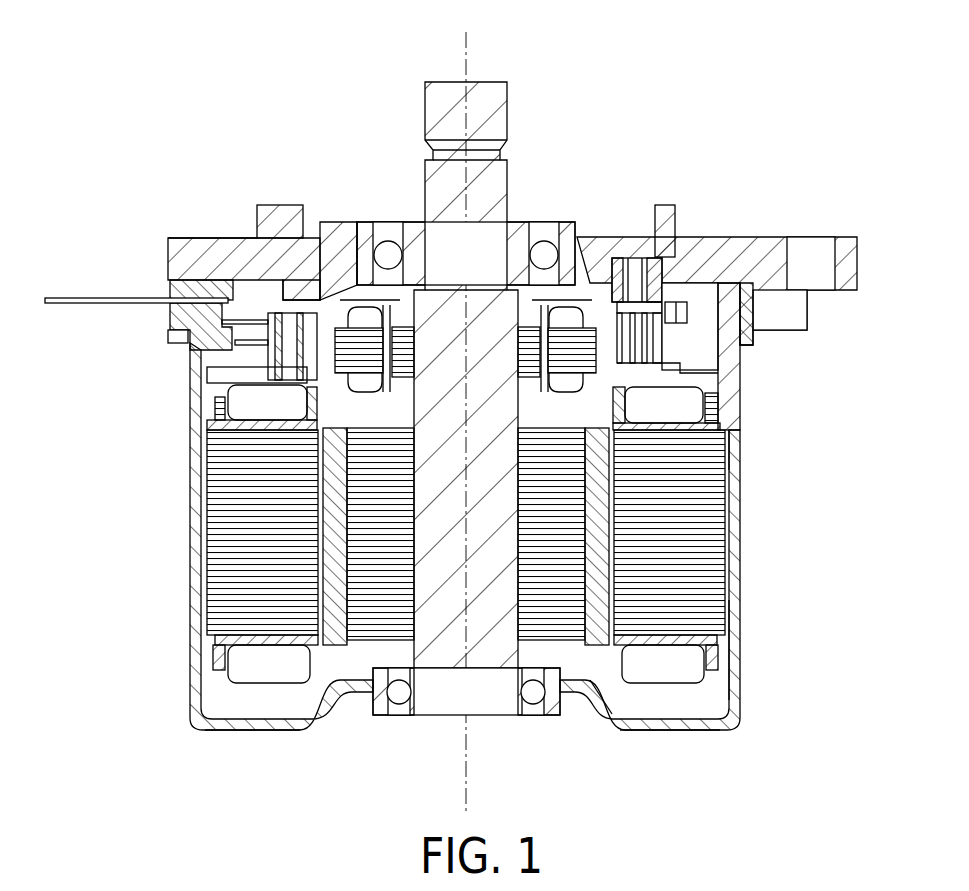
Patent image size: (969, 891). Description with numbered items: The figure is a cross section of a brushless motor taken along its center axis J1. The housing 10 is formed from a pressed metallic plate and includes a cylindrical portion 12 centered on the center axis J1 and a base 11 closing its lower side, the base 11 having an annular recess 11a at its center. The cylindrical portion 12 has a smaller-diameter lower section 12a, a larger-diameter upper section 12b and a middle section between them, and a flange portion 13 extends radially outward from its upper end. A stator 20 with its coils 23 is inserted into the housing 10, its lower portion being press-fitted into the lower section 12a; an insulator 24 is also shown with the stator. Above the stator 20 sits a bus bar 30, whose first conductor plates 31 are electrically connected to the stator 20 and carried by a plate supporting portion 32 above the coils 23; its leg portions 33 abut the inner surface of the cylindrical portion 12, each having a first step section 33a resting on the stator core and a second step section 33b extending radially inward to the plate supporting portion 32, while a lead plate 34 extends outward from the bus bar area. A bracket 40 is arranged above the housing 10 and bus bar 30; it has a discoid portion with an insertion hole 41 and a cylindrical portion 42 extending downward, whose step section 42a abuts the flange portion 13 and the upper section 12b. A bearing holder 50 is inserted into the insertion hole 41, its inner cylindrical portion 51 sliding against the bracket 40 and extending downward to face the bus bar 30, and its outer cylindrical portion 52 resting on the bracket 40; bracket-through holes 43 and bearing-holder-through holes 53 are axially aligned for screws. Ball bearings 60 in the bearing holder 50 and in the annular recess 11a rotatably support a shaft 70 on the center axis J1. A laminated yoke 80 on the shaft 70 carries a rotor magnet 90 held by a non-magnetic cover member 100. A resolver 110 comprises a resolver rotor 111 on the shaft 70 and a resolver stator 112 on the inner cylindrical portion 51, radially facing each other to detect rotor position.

The center axis J1 is at (472, 52).
The housing 10 is at (662, 744).
The base 11 is at (704, 731).
The annular recess 11a is at (567, 708).
The cylindrical portion 12 is at (740, 527).
The lower section 12a is at (738, 658).
The upper section 12b is at (742, 385).
The flange portion 13 is at (170, 336).
The stator 20 is at (226, 516).
The coils 23 is at (262, 668).
The insulator 24 is at (228, 405).
The bus bar 30 is at (752, 355).
The first conductor plates 31 is at (255, 350).
The plate supporting portion 32 is at (250, 348).
The leg portions 33 is at (222, 382).
The first step section 33a is at (722, 428).
The second step section 33b is at (718, 392).
The lead plate 34 is at (118, 298).
The bracket 40 is at (200, 283).
The insertion hole 41 is at (262, 199).
The cylindrical portion 42 is at (742, 262).
The step section 42a is at (722, 262).
The bracket-through holes 43 is at (690, 258).
The bearing holder 50 is at (222, 237).
The inner cylindrical portion 51 is at (330, 343).
The outer cylindrical portion 52 is at (236, 278).
The bearing-holder-through holes 53 is at (636, 258).
The ball bearings 60 is at (543, 222).
The shaft 70 is at (455, 625).
The yoke 80 is at (338, 648).
The rotor magnet 90 is at (382, 624).
The cover member 100 is at (302, 642).
The resolver 110 is at (402, 318).
The resolver rotor 111 is at (552, 322).
The resolver stator 112 is at (352, 385).